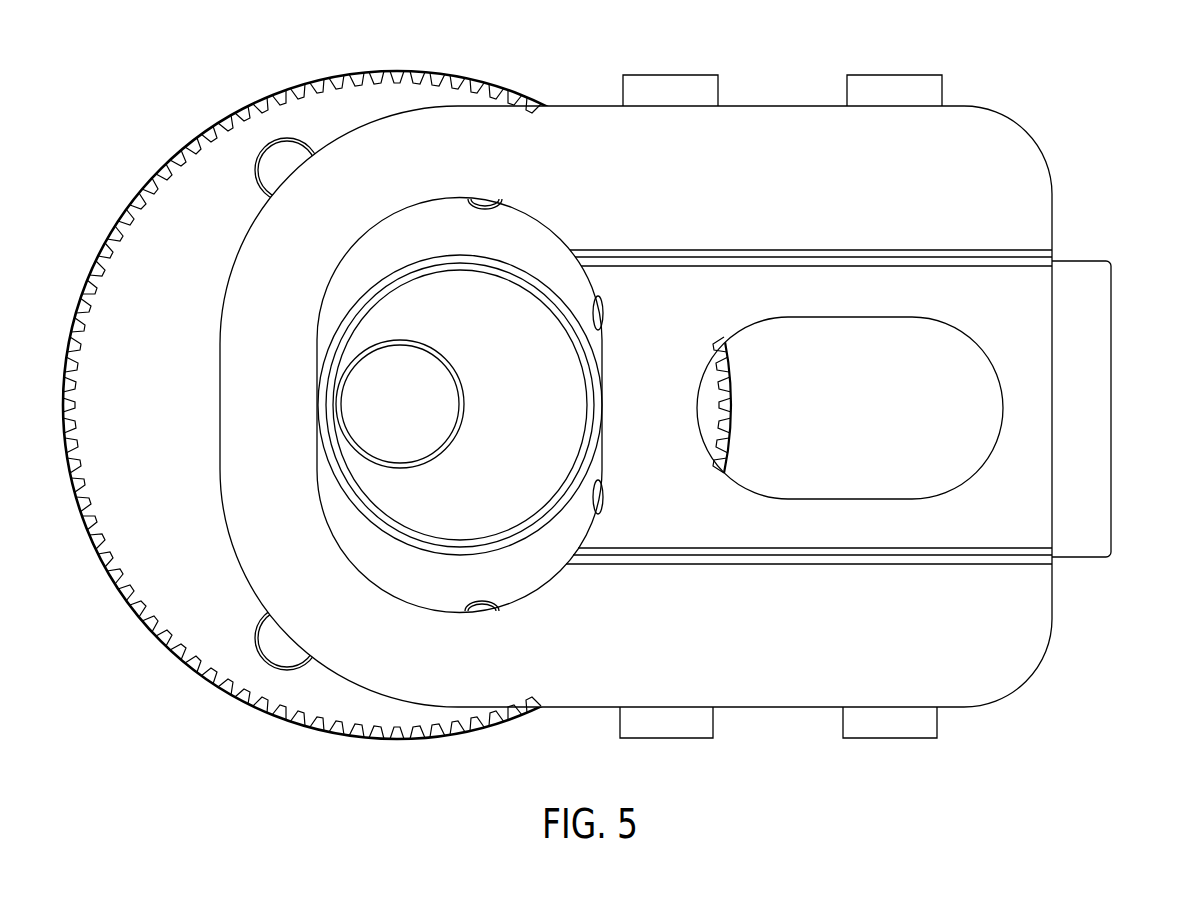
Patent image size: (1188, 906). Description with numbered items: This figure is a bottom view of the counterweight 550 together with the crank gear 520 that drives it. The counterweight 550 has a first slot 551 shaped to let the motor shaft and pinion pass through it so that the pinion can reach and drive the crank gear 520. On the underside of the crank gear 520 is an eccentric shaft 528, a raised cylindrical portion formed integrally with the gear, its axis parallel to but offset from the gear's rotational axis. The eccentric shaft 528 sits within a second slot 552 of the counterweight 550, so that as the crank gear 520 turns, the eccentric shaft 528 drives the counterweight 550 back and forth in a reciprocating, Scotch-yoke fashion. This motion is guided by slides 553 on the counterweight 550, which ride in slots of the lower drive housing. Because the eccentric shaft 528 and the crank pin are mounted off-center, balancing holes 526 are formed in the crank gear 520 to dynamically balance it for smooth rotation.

The crank gear 520 is at (140, 608).
The balancing holes 526 is at (268, 147).
The eccentric shaft 528 is at (423, 553).
The counterweight 550 is at (1112, 333).
The first slot 551 is at (992, 432).
The second slot 552 is at (455, 612).
The slides 553 is at (677, 740).